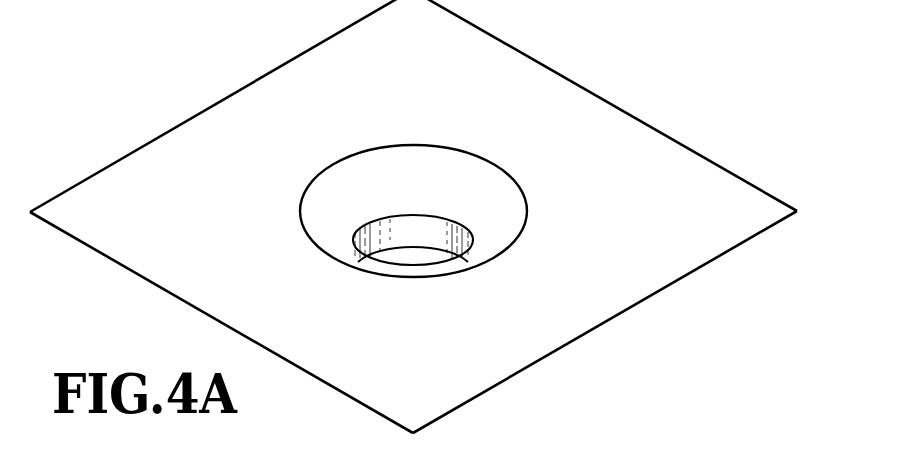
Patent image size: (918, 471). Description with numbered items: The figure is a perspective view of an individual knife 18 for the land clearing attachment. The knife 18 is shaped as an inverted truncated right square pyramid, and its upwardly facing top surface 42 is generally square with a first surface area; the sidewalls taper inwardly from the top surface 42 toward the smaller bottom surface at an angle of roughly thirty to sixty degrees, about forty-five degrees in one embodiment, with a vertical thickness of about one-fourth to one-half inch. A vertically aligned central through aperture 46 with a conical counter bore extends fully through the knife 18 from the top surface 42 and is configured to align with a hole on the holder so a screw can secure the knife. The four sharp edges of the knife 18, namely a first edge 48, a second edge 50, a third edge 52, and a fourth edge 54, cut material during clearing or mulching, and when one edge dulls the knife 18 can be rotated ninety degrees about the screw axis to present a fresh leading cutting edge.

The knife 18 is at (635, 54).
The top surface 42 is at (413, 216).
The central through aperture 46 is at (420, 228).
The first edge 48 is at (600, 327).
The second edge 50 is at (172, 293).
The third edge 52 is at (238, 92).
The fourth edge 54 is at (643, 123).